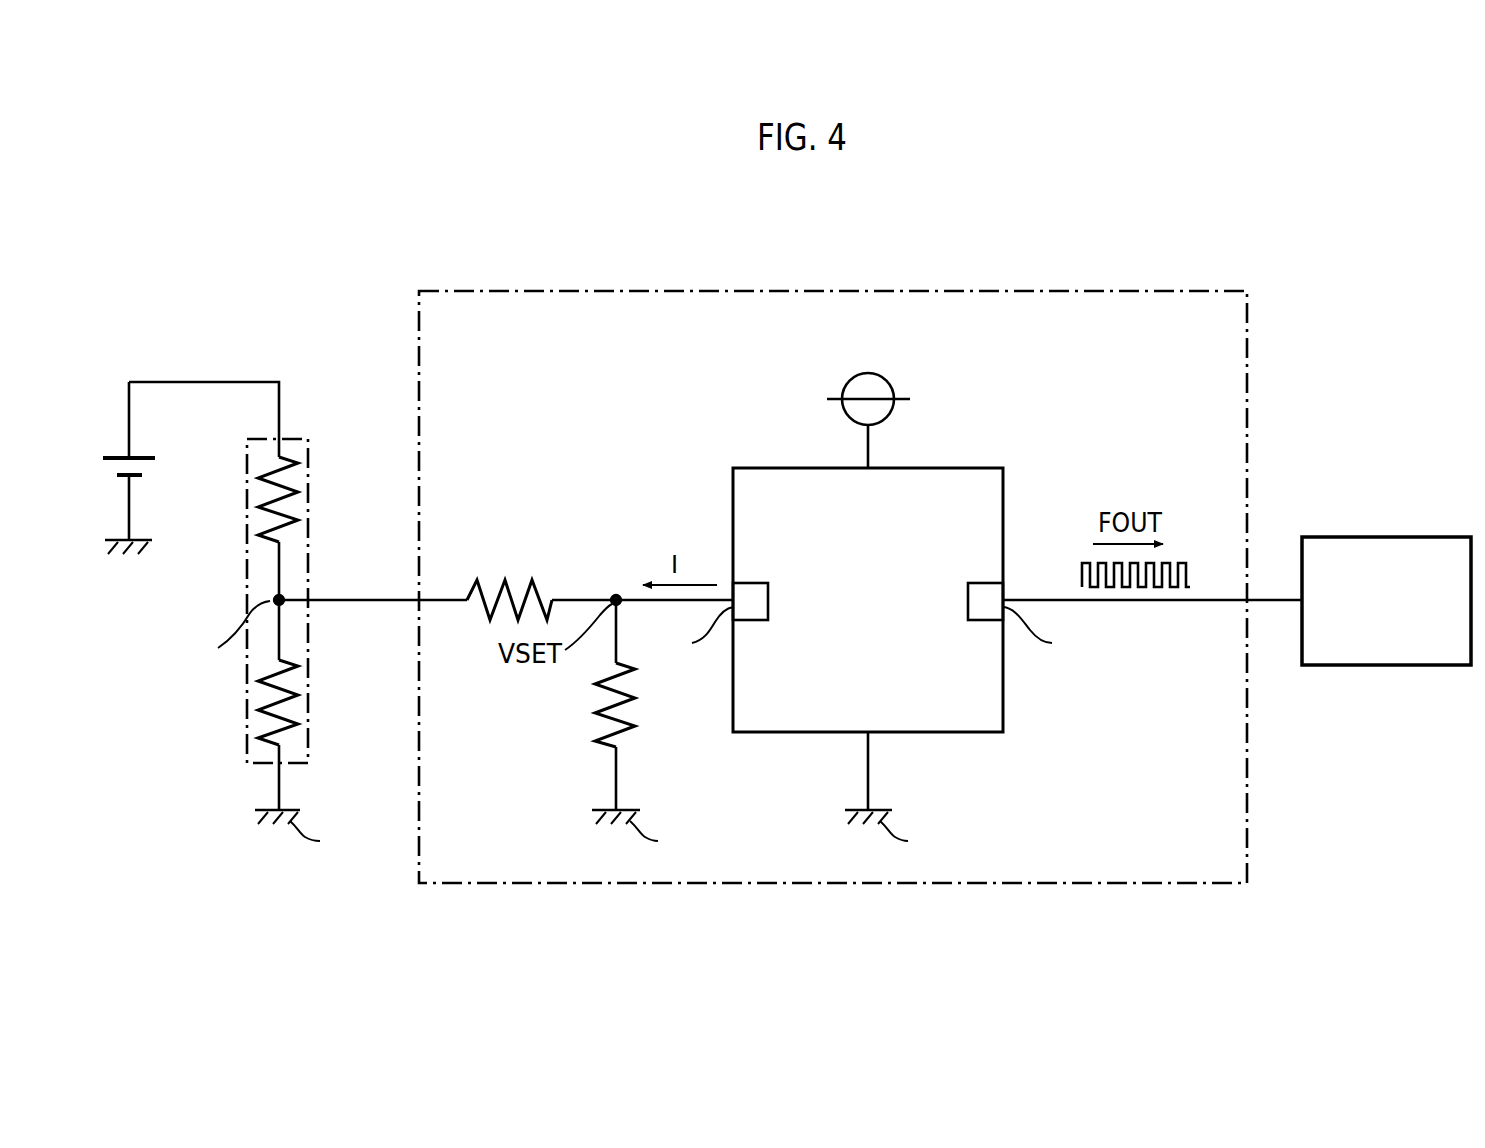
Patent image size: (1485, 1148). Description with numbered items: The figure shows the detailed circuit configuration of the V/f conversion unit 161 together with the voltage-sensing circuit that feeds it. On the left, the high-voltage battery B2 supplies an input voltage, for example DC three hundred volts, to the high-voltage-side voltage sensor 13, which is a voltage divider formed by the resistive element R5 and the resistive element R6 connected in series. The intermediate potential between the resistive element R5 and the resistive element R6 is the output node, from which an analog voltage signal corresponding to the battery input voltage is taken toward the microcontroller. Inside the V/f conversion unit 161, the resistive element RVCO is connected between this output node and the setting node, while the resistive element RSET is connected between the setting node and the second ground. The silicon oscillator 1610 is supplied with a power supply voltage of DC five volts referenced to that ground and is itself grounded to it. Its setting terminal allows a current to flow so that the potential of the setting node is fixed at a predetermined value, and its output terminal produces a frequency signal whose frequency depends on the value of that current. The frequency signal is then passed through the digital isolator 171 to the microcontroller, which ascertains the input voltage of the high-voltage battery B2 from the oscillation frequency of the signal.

The V/f conversion unit 161 is at (1150, 291).
The silicon oscillator 1610 is at (788, 468).
The digital isolator 171 is at (1386, 537).
The high-voltage-side voltage sensor 13 is at (261, 646).
The high-voltage battery B2 is at (143, 457).
The resistive element R5 is at (290, 513).
The resistive element R6 is at (290, 700).
The resistive element RVCO is at (517, 578).
The resistive element RSET is at (605, 730).